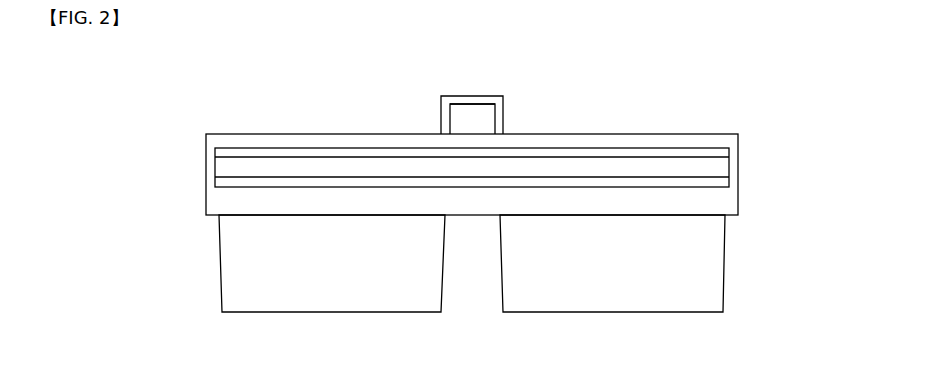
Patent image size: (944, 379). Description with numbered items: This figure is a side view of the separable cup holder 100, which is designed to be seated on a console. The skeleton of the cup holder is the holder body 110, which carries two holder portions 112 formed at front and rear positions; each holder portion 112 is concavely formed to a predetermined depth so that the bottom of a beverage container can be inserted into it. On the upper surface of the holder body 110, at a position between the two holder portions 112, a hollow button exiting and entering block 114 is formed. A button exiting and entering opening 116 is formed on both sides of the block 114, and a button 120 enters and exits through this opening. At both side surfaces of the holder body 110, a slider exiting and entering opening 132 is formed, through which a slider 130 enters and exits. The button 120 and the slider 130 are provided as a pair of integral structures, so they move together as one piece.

The separable cup holder 100 is at (178, 170).
The holder body 110 is at (738, 160).
The holder portion 112 is at (238, 273).
The button exiting and entering block 114 is at (503, 118).
The button exiting and entering opening 116 is at (465, 104).
The button 120 is at (460, 122).
The slider 130 is at (718, 169).
The slider exiting and entering opening 132 is at (597, 186).